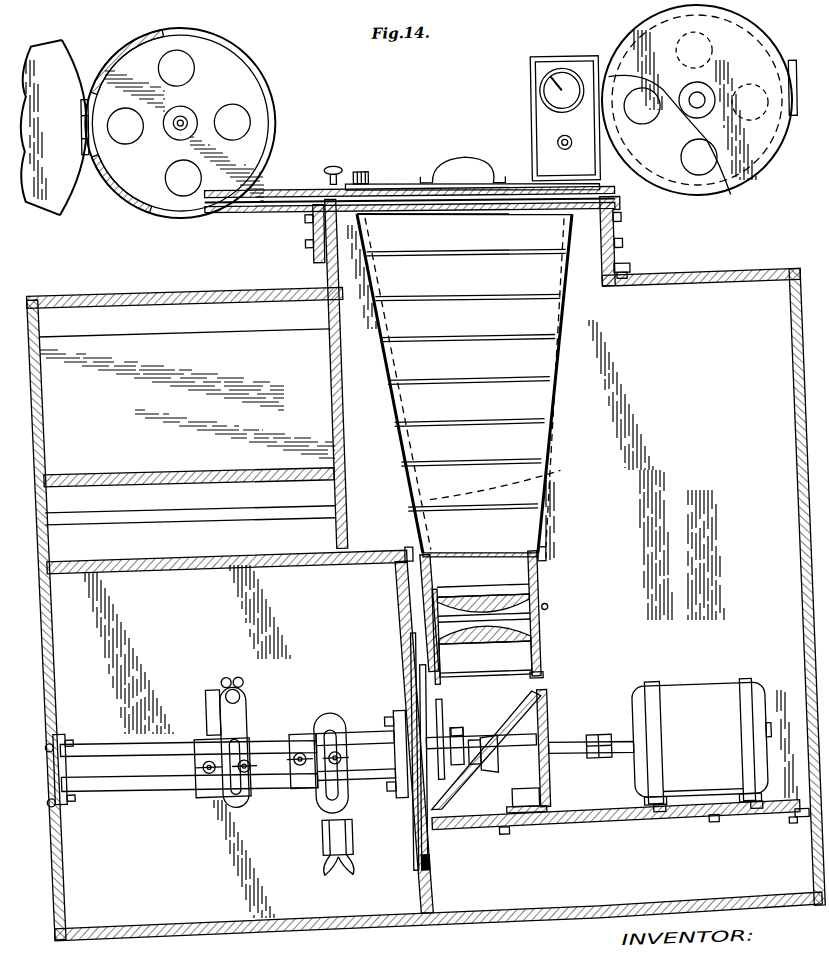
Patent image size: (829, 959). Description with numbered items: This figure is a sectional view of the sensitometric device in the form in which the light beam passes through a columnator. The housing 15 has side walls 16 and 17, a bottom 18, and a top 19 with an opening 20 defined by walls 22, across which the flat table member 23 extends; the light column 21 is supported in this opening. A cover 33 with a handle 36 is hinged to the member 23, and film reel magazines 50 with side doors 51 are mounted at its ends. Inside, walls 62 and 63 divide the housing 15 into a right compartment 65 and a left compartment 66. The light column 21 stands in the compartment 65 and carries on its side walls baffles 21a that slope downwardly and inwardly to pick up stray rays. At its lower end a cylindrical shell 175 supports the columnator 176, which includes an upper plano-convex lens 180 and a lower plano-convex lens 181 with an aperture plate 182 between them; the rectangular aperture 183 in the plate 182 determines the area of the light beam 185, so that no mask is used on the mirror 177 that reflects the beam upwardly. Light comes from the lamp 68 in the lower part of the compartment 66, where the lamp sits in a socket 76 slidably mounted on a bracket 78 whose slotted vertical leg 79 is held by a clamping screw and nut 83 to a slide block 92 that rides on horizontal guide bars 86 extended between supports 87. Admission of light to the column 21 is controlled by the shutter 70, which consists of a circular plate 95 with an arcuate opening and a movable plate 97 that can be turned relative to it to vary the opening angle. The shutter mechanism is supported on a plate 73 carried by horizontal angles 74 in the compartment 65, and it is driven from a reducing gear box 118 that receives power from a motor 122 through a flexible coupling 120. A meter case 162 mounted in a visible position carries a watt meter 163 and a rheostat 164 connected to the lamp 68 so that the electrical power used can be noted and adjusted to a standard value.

The housing 15 is at (425, 595).
The side wall 16 is at (41, 387).
The side wall 17 is at (690, 452).
The bottom 18 is at (312, 922).
The top 19 is at (705, 285).
The opening 20 is at (628, 267).
The light column 21 is at (486, 387).
The baffles 21a is at (508, 382).
The walls 22 is at (606, 223).
The flat table member 23 is at (628, 222).
The cover 33 is at (394, 183).
The handle 36 is at (477, 163).
The film reel magazines 50 is at (251, 92).
The side doors 51 is at (51, 69).
The wall 62 is at (331, 404).
The wall 63 is at (360, 550).
The right compartment 65 is at (680, 582).
The left compartment 66 is at (160, 654).
The lamp 68 is at (308, 797).
The shutter 70 is at (411, 845).
The plate 73 is at (603, 827).
The horizontal angles 74 is at (783, 828).
The socket 76 is at (314, 858).
The bracket 78 is at (313, 826).
The vertical leg 79 is at (318, 714).
The clamping screw and nut 83 is at (334, 728).
The horizontal guide bars 86 is at (109, 779).
The supports 87 is at (59, 716).
The slide block 92 is at (197, 783).
The circular plate 95 is at (408, 652).
The movable plate 97 is at (420, 865).
The reducing gear box 118 is at (536, 795).
The flexible coupling 120 is at (598, 750).
The motor 122 is at (695, 705).
The meter case 162 is at (553, 74).
The watt meter 163 is at (554, 100).
The rheostat 164 is at (570, 140).
The cylindrical shell 175 is at (533, 600).
The columnator 176 is at (506, 663).
The mirror 177 is at (544, 727).
The upper plano-convex lens 180 is at (509, 597).
The lower plano-convex lens 181 is at (548, 618).
The aperture plate 182 is at (420, 606).
The rectangular aperture 183 is at (467, 597).
The light beam 185 is at (566, 472).